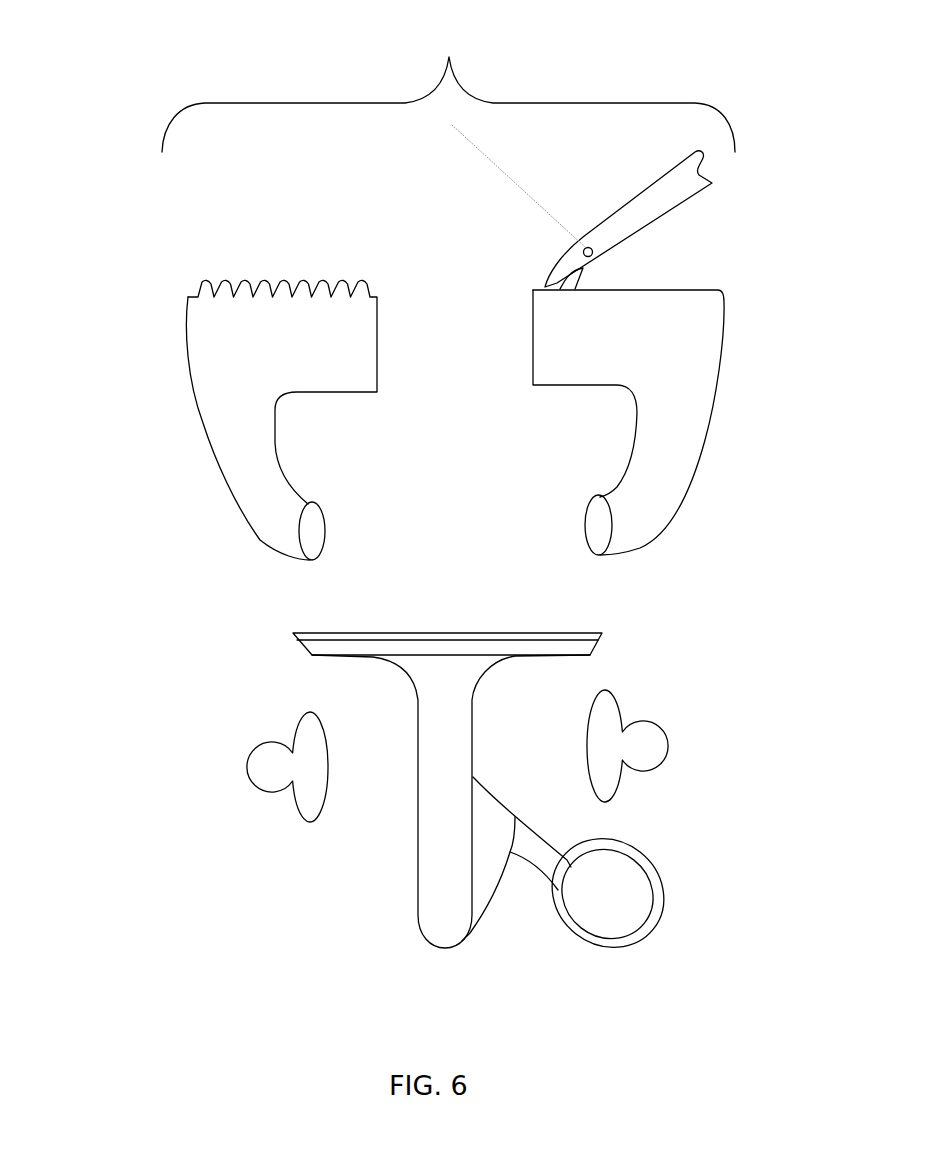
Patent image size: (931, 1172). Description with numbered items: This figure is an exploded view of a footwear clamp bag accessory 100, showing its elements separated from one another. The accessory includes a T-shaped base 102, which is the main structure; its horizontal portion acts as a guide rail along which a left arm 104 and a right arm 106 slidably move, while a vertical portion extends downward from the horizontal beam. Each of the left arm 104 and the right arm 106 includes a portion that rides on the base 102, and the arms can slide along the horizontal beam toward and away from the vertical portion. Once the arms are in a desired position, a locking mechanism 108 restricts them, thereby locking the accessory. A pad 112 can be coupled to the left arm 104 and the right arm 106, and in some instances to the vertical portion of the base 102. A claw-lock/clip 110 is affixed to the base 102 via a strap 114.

The footwear clamp bag accessory 100 is at (103, 160).
The base 102 is at (402, 841).
The left arm 104 is at (168, 400).
The right arm 106 is at (731, 422).
The locking mechanism 108 is at (448, 156).
The claw-lock/clip 110 is at (668, 948).
The pad 112 is at (240, 798).
The strap 114 is at (540, 893).